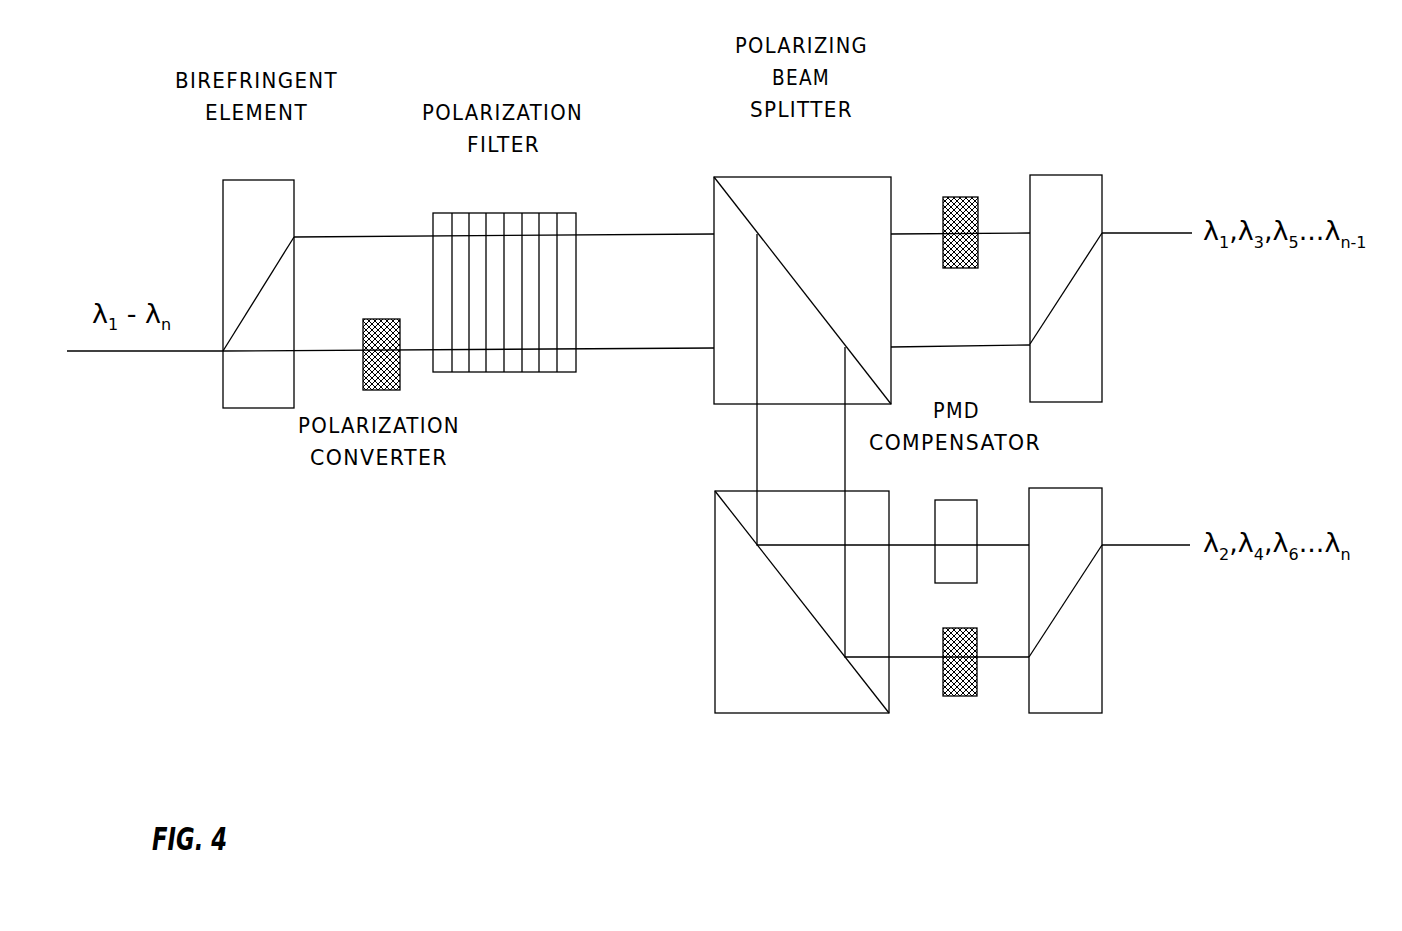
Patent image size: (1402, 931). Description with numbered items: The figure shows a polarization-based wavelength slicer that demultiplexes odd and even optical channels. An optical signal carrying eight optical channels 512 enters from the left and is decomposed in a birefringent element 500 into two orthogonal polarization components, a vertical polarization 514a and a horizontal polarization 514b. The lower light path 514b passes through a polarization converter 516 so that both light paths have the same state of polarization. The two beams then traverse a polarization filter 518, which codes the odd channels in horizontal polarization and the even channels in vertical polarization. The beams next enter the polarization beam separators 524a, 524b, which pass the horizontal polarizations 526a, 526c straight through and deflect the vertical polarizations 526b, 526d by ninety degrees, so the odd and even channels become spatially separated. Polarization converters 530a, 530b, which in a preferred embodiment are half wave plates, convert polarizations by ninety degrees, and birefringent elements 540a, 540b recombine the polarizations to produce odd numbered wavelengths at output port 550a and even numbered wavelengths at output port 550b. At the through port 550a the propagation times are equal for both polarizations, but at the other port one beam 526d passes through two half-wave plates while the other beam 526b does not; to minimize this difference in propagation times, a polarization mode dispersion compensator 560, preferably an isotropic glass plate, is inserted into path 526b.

The birefringent element 500 is at (263, 178).
The optical signal carrying eight optical channels 512 is at (132, 352).
The vertical polarization component 514a is at (325, 235).
The horizontal polarization component 514b is at (329, 348).
The polarization converter 516 is at (381, 391).
The polarization filter 518 is at (505, 212).
The polarization beam separator 524a is at (798, 176).
The polarization beam separator 524b is at (775, 714).
The horizontal polarization beam 526a is at (903, 238).
The vertical polarization beam 526b is at (757, 453).
The horizontal polarization beam 526c is at (918, 348).
The vertical polarization beam 526d is at (908, 660).
The polarization converter 530a is at (960, 196).
The polarization converter 530b is at (964, 697).
The birefringent element 540a is at (1067, 175).
The birefringent element 540b is at (1089, 488).
The output port 550a is at (1145, 233).
The output port 550b is at (1145, 545).
The polarization mode dispersion compensator 560 is at (959, 499).